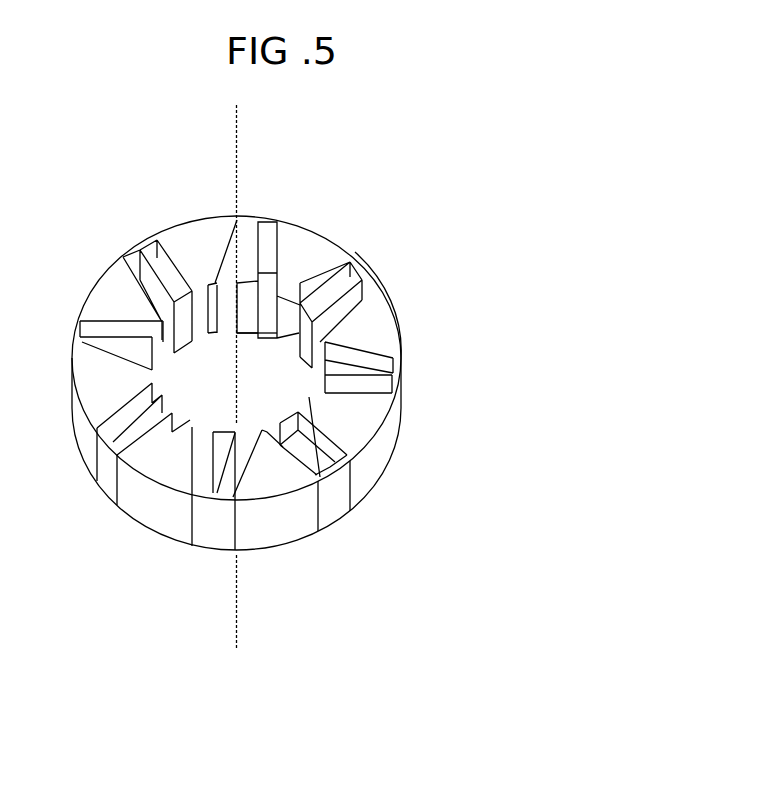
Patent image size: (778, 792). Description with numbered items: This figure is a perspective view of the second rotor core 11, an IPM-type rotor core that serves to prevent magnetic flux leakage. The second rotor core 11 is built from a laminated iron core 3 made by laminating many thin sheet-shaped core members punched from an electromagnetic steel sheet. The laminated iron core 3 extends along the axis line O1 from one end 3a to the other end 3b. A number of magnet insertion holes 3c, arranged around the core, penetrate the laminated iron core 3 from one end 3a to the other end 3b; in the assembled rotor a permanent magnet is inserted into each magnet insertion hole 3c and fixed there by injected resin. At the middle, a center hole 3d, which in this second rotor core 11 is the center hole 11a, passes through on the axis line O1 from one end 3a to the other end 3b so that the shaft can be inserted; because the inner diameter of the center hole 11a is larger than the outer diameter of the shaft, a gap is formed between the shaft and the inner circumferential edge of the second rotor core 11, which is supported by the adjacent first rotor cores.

The laminated iron core 3 is at (401, 338).
The one end 3a is at (383, 320).
The other end 3b is at (373, 490).
The magnet insertion hole 3c is at (217, 333).
The center hole 3d is at (343, 255).
The second rotor core 11 is at (313, 206).
The center hole 11a is at (259, 357).
The axis line O1 is at (235, 365).